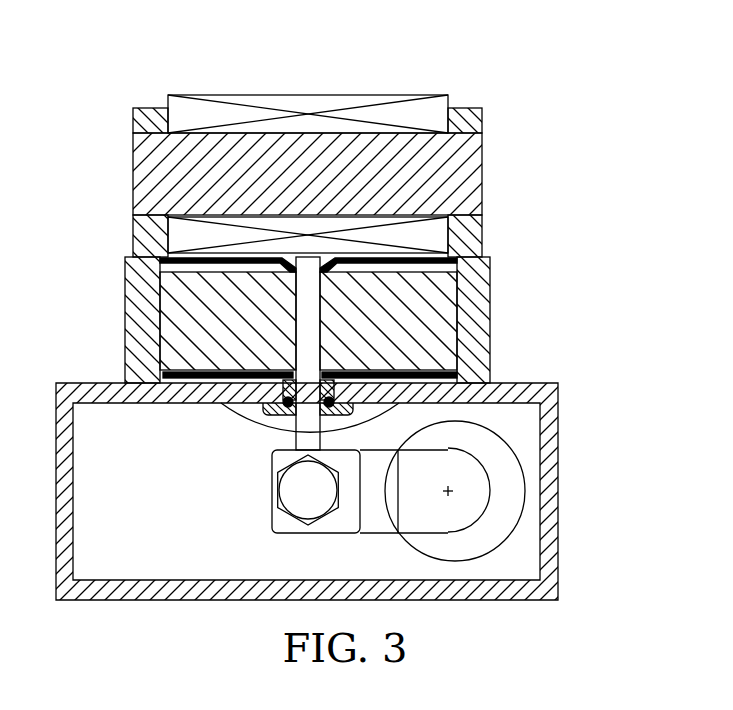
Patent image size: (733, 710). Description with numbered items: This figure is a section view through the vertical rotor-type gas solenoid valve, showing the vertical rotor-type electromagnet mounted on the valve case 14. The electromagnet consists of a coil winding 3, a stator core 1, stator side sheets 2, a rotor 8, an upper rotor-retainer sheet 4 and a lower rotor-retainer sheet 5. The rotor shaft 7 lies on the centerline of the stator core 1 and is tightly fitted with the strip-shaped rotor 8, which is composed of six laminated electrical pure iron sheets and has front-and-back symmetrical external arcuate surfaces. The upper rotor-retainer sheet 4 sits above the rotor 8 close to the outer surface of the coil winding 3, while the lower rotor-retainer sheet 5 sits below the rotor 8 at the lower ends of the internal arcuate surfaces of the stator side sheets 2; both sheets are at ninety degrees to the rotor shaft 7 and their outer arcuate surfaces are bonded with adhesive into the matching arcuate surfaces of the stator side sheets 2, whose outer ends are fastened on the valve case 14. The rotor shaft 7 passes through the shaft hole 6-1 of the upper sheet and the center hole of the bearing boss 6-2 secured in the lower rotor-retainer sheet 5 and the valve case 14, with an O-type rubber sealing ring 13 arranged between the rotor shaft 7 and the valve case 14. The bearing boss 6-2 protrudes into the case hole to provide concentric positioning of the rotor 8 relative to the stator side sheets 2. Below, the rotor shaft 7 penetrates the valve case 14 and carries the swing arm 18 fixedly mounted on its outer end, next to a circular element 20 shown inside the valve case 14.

The stator core 1 is at (150, 165).
The stator side sheets 2 is at (153, 120).
The coil winding 3 is at (182, 105).
The upper rotor-retainer sheet 4 is at (145, 240).
The lower rotor-retainer sheet 5 is at (163, 375).
The shaft hole 6-1 is at (350, 273).
The bearing boss 6-2 is at (329, 402).
The rotor shaft 7 is at (310, 352).
The rotor 8 is at (172, 337).
The O-type rubber sealing ring 13 is at (338, 385).
The valve case 14 is at (470, 592).
The swing arm 18 is at (412, 517).
The cam wheel 20 is at (502, 497).